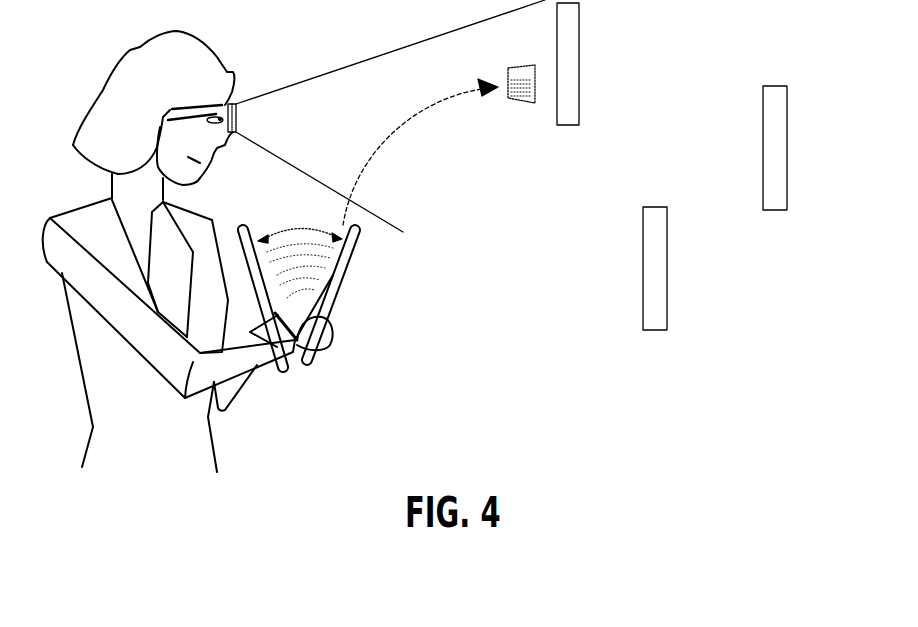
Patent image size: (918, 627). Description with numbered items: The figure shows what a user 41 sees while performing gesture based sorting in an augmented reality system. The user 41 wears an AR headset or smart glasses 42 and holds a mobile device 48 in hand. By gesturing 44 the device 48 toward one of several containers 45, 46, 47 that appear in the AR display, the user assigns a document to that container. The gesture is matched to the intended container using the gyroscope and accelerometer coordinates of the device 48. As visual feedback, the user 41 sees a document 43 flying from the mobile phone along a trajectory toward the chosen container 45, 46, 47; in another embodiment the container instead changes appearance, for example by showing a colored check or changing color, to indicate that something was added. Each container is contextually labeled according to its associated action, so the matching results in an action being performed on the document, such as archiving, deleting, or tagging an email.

The user 41 is at (104, 92).
The AR headset or smart glasses 42 is at (233, 101).
The document 43 is at (530, 104).
The gesturing 44 is at (300, 228).
The container 45 is at (579, 25).
The container 46 is at (787, 128).
The container 47 is at (667, 272).
The device 48 is at (358, 250).